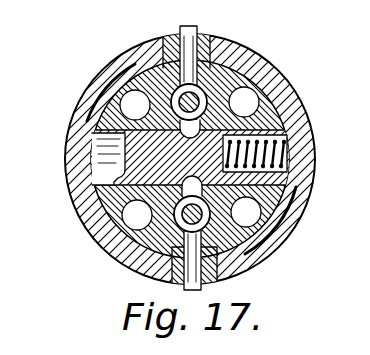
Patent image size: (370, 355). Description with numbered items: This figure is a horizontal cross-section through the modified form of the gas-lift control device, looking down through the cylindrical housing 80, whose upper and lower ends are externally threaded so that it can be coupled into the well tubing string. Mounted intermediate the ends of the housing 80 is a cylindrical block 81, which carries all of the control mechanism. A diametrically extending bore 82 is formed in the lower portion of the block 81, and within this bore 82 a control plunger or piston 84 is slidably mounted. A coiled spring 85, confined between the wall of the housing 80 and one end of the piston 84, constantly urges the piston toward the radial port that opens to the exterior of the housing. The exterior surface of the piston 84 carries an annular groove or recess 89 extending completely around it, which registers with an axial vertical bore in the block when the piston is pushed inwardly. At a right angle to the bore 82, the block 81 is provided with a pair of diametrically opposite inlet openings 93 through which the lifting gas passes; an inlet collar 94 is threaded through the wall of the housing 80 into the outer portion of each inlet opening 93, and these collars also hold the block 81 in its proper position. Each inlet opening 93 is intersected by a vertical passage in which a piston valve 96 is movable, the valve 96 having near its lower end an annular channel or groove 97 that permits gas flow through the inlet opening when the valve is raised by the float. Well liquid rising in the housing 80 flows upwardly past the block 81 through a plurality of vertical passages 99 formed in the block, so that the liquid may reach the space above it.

The housing 80 is at (288, 217).
The cylindrical block 81 is at (118, 118).
The diametrically extending bore 82 is at (98, 186).
The control plunger or piston 84 is at (135, 152).
The coiled spring 85 is at (287, 153).
The annular groove or recess 89 is at (208, 120).
The inlet openings 93 is at (212, 63).
The inlet collar 94 is at (173, 32).
The piston valve 96 is at (134, 62).
The annular channel or groove 97 is at (262, 246).
The vertical passages 99 is at (240, 88).